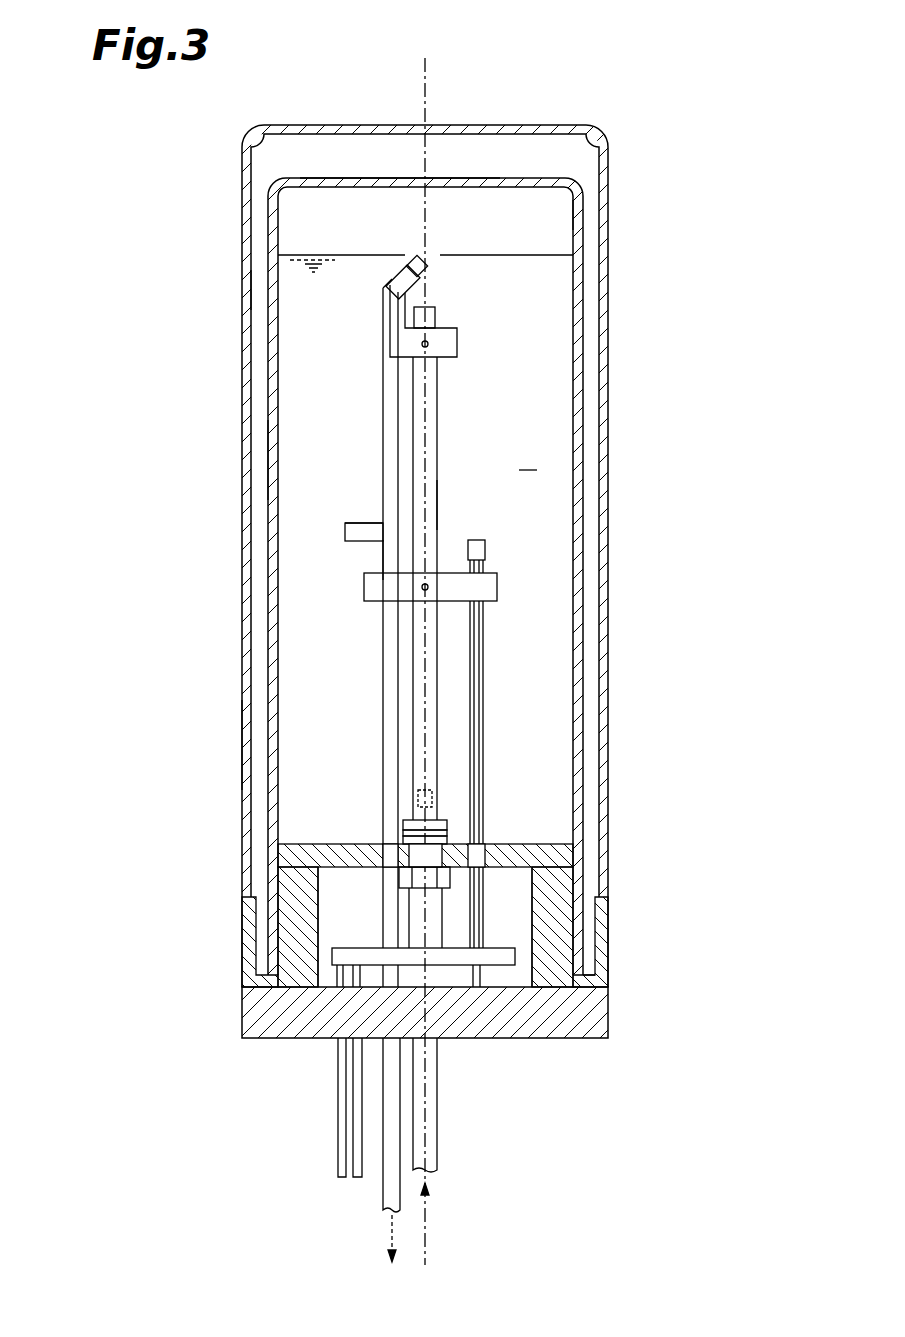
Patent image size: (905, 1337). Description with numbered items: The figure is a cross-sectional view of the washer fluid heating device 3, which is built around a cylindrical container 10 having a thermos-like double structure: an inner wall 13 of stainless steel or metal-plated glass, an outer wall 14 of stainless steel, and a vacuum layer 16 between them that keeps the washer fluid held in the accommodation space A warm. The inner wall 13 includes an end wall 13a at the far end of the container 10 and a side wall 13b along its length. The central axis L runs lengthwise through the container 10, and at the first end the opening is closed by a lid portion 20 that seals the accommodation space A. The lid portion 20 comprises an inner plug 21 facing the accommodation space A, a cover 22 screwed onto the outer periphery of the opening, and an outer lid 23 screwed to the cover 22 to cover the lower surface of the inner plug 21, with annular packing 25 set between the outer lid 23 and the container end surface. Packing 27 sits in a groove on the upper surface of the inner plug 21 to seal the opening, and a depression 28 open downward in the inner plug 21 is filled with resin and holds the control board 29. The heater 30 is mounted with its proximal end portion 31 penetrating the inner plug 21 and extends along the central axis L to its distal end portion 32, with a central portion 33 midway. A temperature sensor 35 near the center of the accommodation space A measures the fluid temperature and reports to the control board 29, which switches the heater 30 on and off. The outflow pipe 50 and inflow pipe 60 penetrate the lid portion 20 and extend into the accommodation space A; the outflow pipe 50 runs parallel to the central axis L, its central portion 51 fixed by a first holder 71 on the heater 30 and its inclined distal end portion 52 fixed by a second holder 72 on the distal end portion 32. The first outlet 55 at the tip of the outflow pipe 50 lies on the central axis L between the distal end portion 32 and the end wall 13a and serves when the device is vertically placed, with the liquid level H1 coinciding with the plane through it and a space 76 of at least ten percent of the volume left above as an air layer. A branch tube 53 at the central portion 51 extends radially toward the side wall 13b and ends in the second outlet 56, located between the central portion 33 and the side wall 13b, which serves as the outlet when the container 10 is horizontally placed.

The washer fluid heating device 3 is at (651, 116).
The container 10 is at (623, 337).
The inner wall 13 is at (256, 546).
The end wall 13a is at (355, 178).
The side wall 13b is at (270, 462).
The outer wall 14 is at (241, 742).
The vacuum layer 16 is at (262, 292).
The lid portion 20 is at (483, 952).
The inner plug 21 is at (565, 903).
The cover 22 is at (608, 940).
The outer lid 23 is at (457, 1012).
The annular packing 25 is at (583, 978).
The packing 27 is at (567, 852).
The depression 28 is at (340, 915).
The control board 29 is at (330, 957).
The heater 30 is at (438, 436).
The proximal end portion 31 is at (438, 790).
The distal end portion 32 is at (432, 306).
The central portion 33 is at (438, 506).
The temperature sensor 35 is at (486, 550).
The outflow pipe 50 is at (381, 400).
The central portion 51 is at (382, 557).
The distal end portion 52 is at (408, 258).
The branch tube 53 is at (363, 522).
The first outlet 55 is at (428, 262).
The second outlet 56 is at (343, 532).
The inflow pipe 60 is at (437, 1108).
The first holder 71 is at (497, 590).
The second holder 72 is at (457, 345).
The space 76 is at (550, 213).
The accommodation space A is at (528, 456).
The liquid level H1 is at (300, 250).
The central axis L is at (428, 78).